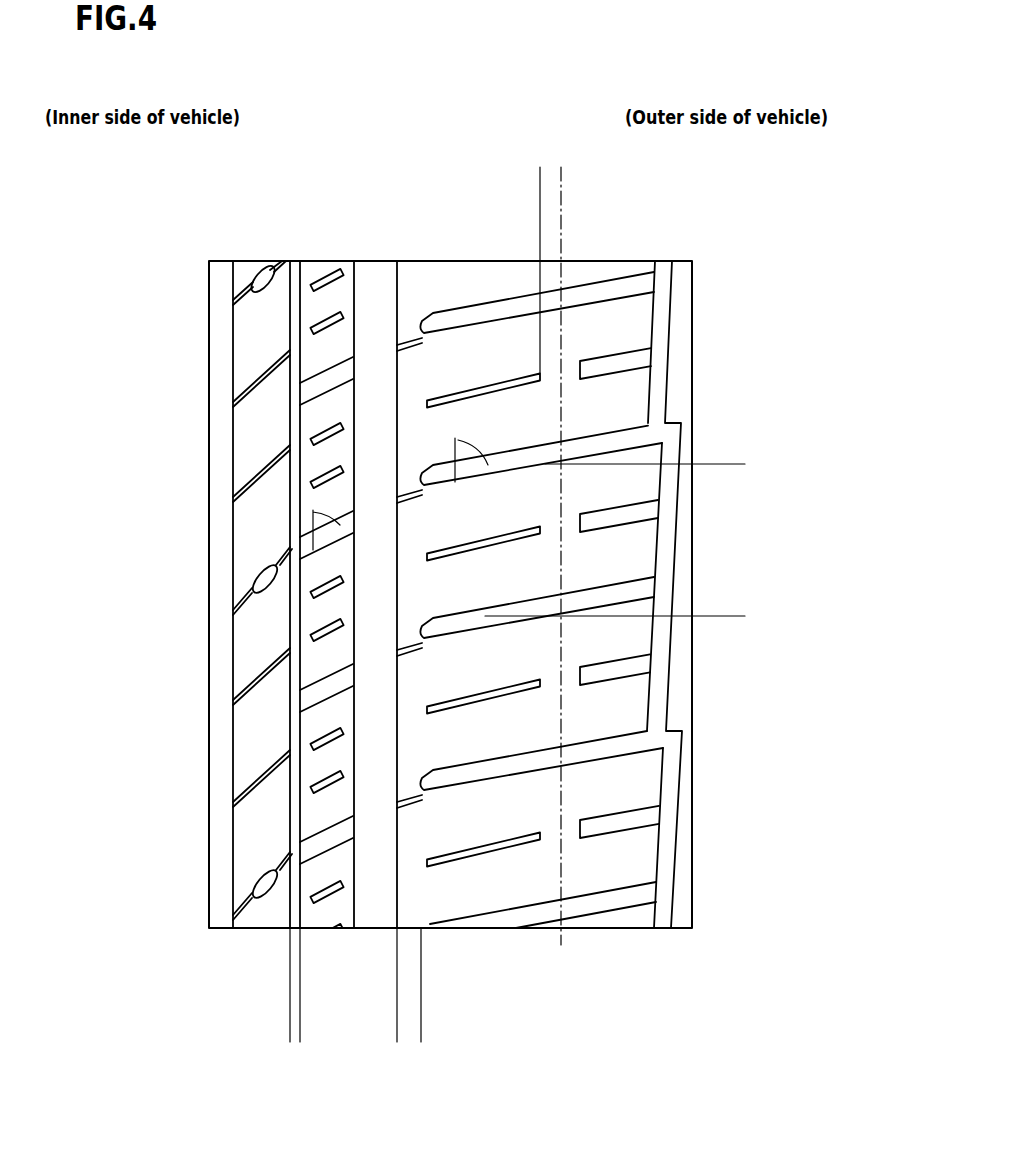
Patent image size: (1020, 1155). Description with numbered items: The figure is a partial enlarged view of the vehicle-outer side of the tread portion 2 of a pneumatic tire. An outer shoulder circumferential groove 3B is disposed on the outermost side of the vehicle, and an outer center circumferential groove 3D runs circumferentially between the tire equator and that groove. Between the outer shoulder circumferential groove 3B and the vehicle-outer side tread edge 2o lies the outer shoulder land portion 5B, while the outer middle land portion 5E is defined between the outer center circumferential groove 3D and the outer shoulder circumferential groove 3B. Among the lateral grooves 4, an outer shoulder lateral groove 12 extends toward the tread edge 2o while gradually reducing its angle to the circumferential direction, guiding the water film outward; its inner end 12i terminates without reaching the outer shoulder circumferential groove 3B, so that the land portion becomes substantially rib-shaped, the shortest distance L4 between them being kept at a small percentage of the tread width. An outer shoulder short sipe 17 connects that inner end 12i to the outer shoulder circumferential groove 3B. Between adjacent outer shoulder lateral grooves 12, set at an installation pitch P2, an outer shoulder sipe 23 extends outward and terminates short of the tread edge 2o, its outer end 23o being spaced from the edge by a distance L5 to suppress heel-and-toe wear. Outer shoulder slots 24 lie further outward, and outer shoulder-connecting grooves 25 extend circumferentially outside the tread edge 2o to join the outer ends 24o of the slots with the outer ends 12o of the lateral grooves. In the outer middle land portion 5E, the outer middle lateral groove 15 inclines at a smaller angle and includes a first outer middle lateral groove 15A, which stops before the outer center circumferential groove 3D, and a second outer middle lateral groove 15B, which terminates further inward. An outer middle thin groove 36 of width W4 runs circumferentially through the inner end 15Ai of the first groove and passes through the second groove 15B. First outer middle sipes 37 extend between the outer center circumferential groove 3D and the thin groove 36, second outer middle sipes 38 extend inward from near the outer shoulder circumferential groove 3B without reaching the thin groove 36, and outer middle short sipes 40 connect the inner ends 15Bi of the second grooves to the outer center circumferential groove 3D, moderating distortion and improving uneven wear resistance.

The tread portion 2 is at (645, 255).
The vehicle-outer side tread edge 2o is at (561, 248).
The outer shoulder circumferential groove 3B is at (377, 281).
The outer center circumferential groove 3D is at (221, 273).
The lateral grooves 4 is at (485, 622).
The outer shoulder land portion 5B is at (467, 367).
The outer middle land portion 5E is at (265, 318).
The outer shoulder lateral groove 12 is at (517, 453).
The inner end of the outer shoulder lateral groove 12i is at (412, 785).
The outer end of the outer shoulder lateral groove 12o is at (683, 735).
The outer middle lateral groove 15 is at (150, 392).
The first outer middle lateral groove 15A is at (233, 408).
The tire axial inner end of the first outer middle lateral groove 15Ai is at (235, 706).
The second outer middle lateral groove 15B is at (307, 538).
The tire axial inner end of the second outer middle lateral groove 15Bi is at (250, 898).
The outer shoulder short sipe 17 is at (421, 793).
The outer shoulder sipe 23 is at (500, 392).
The vehicle-outer side outer end of the outer shoulder sipe 23o is at (547, 373).
The outer shoulder slot 24 is at (587, 365).
The outer end of the outer shoulder slot 24o is at (663, 808).
The outer shoulder-connecting groove 25 is at (662, 648).
The outer middle thin groove 36 is at (296, 294).
The first outer middle sipe 37 is at (267, 372).
The second outer middle sipe 38 is at (330, 577).
The outer middle short sipe 40 is at (258, 897).
The shortest distance between the outer shoulder circumferential groove and the inne L4 is at (432, 1041).
The distance between the outer end of the outer shoulder sipe and the vehicle-outer L5 is at (572, 176).
The installation pitch of the outer shoulder lateral groove P2 is at (737, 464).
The groove width of the outer middle thin groove W4 is at (311, 1041).